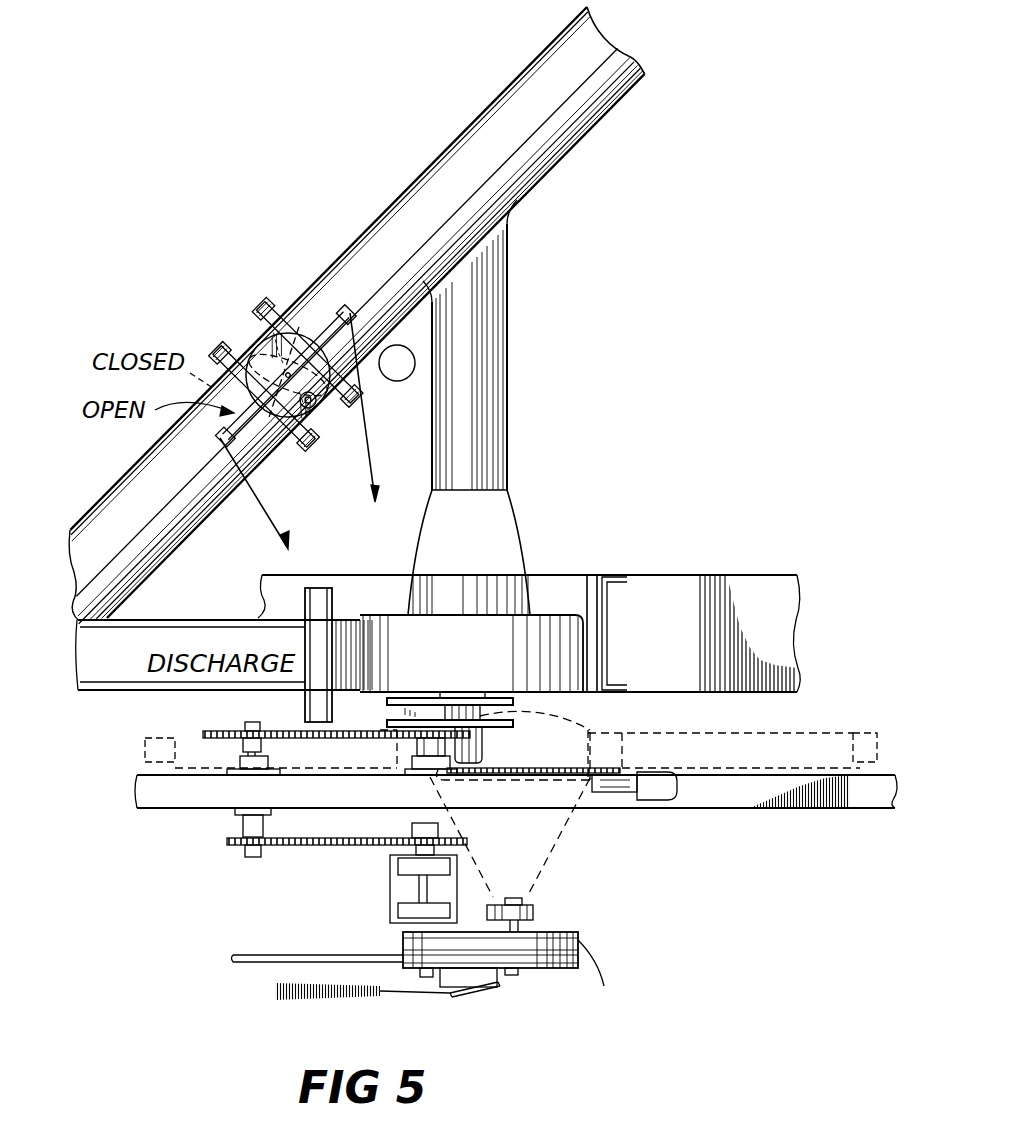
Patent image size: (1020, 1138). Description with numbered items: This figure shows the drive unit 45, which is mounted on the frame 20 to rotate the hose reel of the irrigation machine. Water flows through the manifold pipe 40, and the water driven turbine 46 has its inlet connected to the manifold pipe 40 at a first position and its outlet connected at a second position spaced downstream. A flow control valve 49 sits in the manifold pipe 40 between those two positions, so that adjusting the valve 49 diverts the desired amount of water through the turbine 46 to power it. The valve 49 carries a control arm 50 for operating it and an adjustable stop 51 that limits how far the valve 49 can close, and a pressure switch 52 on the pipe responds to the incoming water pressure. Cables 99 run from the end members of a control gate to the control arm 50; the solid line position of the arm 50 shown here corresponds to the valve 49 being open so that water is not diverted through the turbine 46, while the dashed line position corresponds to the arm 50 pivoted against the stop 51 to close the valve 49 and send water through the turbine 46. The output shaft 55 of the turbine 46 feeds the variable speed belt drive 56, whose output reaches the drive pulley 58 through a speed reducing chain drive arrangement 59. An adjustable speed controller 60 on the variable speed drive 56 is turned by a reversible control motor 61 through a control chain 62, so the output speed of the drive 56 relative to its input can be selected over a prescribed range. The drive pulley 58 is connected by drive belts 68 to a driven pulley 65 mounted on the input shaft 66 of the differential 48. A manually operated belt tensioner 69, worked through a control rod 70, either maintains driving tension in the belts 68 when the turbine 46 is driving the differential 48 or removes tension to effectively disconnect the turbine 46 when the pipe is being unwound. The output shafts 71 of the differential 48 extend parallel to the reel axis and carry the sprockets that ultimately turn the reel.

The frame 20 is at (817, 811).
The manifold pipe 40 is at (495, 116).
The drive unit 45 is at (577, 522).
The water driven turbine 46 is at (558, 623).
The differential 48 is at (556, 832).
The flow control valve 49 is at (249, 330).
The control arm 50 is at (333, 331).
The adjustable stop 51 is at (321, 414).
The pressure switch 52 is at (391, 381).
The output shaft 55 is at (463, 696).
The variable speed belt drive 56 is at (453, 690).
The drive pulley 58 is at (412, 972).
The speed reducing chain drive arrangement 59 is at (230, 727).
The adjustable speed controller 60 is at (530, 771).
The reversible control motor 61 is at (674, 788).
The control chain 62 is at (528, 745).
The driven pulley 65 is at (567, 932).
The input shaft 66 is at (513, 902).
The drive belts 68 is at (607, 973).
The belt tensioner 69 is at (503, 984).
The control rod 70 is at (308, 957).
The output shafts 71 is at (163, 743).
The cables 99 is at (371, 490).